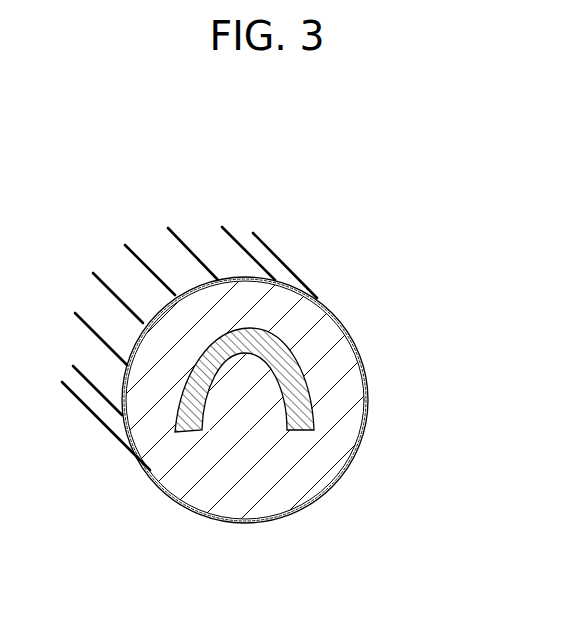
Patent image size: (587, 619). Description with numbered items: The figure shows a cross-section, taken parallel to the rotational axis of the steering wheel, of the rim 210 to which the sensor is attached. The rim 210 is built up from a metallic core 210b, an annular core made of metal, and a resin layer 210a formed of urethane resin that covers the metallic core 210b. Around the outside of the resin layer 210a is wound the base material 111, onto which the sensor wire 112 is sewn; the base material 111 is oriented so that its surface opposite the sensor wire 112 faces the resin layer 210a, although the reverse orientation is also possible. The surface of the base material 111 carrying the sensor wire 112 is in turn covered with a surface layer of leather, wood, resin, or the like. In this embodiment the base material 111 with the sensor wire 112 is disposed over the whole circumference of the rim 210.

The base material 111 is at (218, 521).
The sensor wire 112 is at (193, 252).
The rim 210 is at (347, 337).
The resin layer 210a is at (347, 405).
The metallic core 210b is at (180, 408).